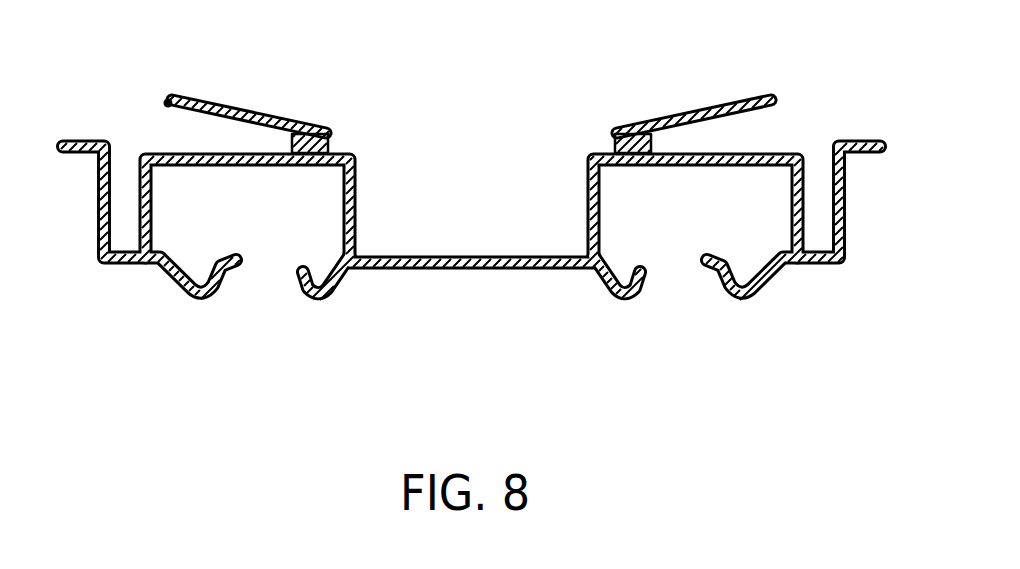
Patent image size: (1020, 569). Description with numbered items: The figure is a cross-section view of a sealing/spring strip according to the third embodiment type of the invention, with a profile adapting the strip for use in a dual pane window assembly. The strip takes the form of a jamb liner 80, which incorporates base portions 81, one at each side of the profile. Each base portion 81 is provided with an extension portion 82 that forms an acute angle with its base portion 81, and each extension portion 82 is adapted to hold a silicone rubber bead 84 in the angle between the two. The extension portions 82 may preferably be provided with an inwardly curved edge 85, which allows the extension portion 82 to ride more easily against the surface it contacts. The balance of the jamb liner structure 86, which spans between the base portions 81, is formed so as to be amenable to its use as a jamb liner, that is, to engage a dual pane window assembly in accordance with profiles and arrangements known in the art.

The jamb liner 80 is at (815, 122).
The base portion 81 is at (160, 153).
The extension portion 82 is at (247, 110).
The silicone rubber bead 84 is at (290, 143).
The inwardly curved edge 85 is at (168, 98).
The jamb liner structure 86 is at (482, 275).